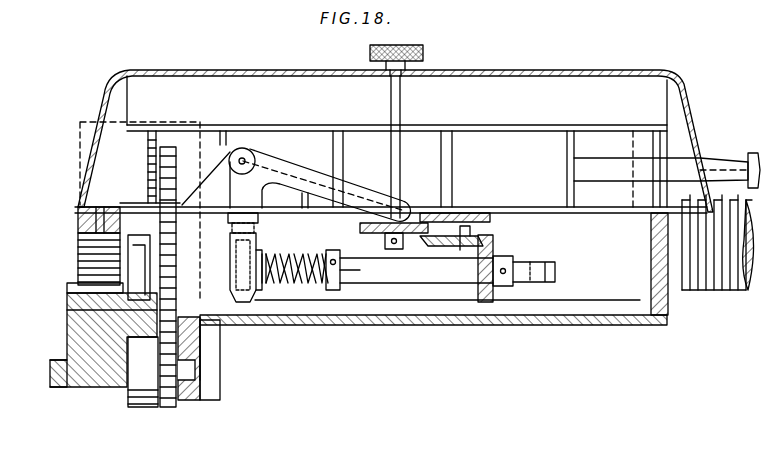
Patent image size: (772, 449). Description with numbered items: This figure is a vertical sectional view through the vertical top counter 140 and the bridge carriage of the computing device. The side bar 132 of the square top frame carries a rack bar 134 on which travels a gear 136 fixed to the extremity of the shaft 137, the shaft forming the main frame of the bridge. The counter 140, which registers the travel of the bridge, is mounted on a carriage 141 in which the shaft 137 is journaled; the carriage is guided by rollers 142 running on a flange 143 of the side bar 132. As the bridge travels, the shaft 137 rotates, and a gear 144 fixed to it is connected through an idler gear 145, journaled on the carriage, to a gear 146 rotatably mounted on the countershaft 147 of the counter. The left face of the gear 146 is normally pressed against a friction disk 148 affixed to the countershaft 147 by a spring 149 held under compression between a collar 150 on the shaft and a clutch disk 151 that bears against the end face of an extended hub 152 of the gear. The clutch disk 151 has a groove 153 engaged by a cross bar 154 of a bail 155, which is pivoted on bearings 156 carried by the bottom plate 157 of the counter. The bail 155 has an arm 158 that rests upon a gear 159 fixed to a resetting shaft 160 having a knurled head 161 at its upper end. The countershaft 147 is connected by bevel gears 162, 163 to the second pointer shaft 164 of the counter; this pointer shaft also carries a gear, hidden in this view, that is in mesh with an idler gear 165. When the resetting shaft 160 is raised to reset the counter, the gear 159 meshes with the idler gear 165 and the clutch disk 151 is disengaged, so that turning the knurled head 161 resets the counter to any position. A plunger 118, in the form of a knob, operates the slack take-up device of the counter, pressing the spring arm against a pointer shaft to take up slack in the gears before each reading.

The plunger 118 is at (748, 150).
The side bar 132 is at (73, 388).
The rack bar 134 is at (67, 288).
The gear 136 is at (78, 228).
The shaft 137 is at (702, 292).
The vertical top counter 140 is at (553, 68).
The carriage 141 is at (184, 404).
The rollers 142 is at (118, 240).
The flange 143 is at (110, 303).
The gear 144 is at (145, 148).
The idler gear 145 is at (115, 328).
The gear 146 is at (208, 328).
The countershaft 147 is at (296, 270).
The friction disk 148 is at (128, 250).
The spring 149 is at (332, 292).
The collar 150 is at (338, 292).
The clutch disk 151 is at (258, 302).
The extended hub 152 is at (259, 218).
The groove 153 is at (256, 230).
The cross bar 154 is at (241, 303).
The bail 155 is at (228, 160).
The bearings 156 is at (187, 152).
The bottom plate 157 is at (545, 207).
The arm 158 is at (300, 167).
The gear 159 is at (380, 250).
The resetting shaft 160 is at (401, 157).
The knurled head 161 is at (425, 52).
The bevel gear 162 is at (480, 304).
The bevel gear 163 is at (440, 250).
The second pointer shaft 164 is at (456, 147).
The idler gear 165 is at (474, 212).